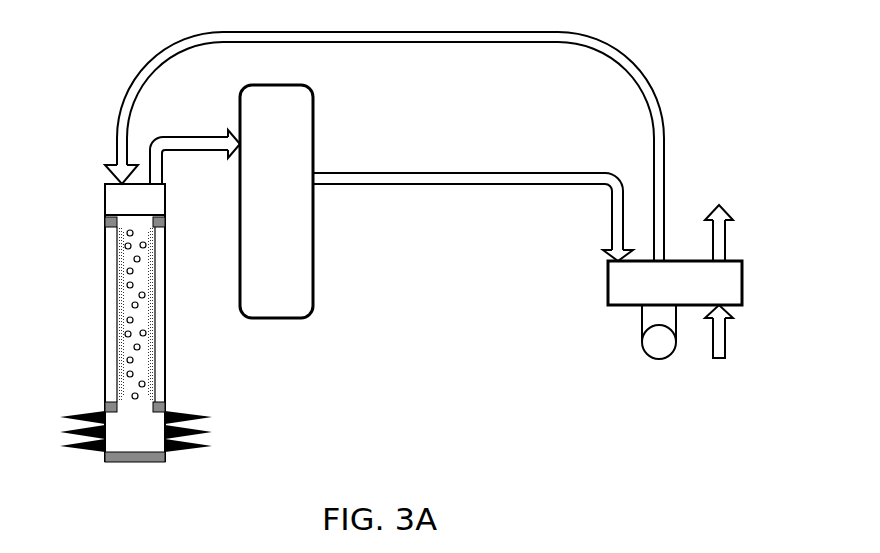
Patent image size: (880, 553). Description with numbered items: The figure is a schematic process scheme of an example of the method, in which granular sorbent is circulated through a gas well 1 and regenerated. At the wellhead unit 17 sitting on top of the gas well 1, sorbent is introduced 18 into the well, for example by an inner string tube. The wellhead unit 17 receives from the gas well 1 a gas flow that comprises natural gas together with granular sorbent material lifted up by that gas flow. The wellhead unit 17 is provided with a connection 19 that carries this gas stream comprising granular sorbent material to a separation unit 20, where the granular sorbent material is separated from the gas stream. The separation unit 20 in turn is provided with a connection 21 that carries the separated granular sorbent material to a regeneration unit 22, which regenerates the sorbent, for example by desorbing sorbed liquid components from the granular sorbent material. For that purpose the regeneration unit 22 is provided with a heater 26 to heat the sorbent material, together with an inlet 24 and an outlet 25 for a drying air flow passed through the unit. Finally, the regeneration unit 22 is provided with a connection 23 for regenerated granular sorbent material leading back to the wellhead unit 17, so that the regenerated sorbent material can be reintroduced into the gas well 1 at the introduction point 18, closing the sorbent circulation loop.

The gas well 1 is at (105, 337).
The wellhead unit 17 is at (105, 205).
The sorbent introduction 18 is at (107, 173).
The connection for gas stream comprising granular sorbent material 19 is at (205, 137).
The separation unit 20 is at (276, 201).
The connection for granular sorbent material 21 is at (446, 173).
The regeneration unit 22 is at (675, 283).
The connection for regenerated granular sorbent material 23 is at (665, 172).
The inlet for drying air flow 24 is at (726, 347).
The outlet for drying air flow 25 is at (726, 239).
The heater 26 is at (642, 347).